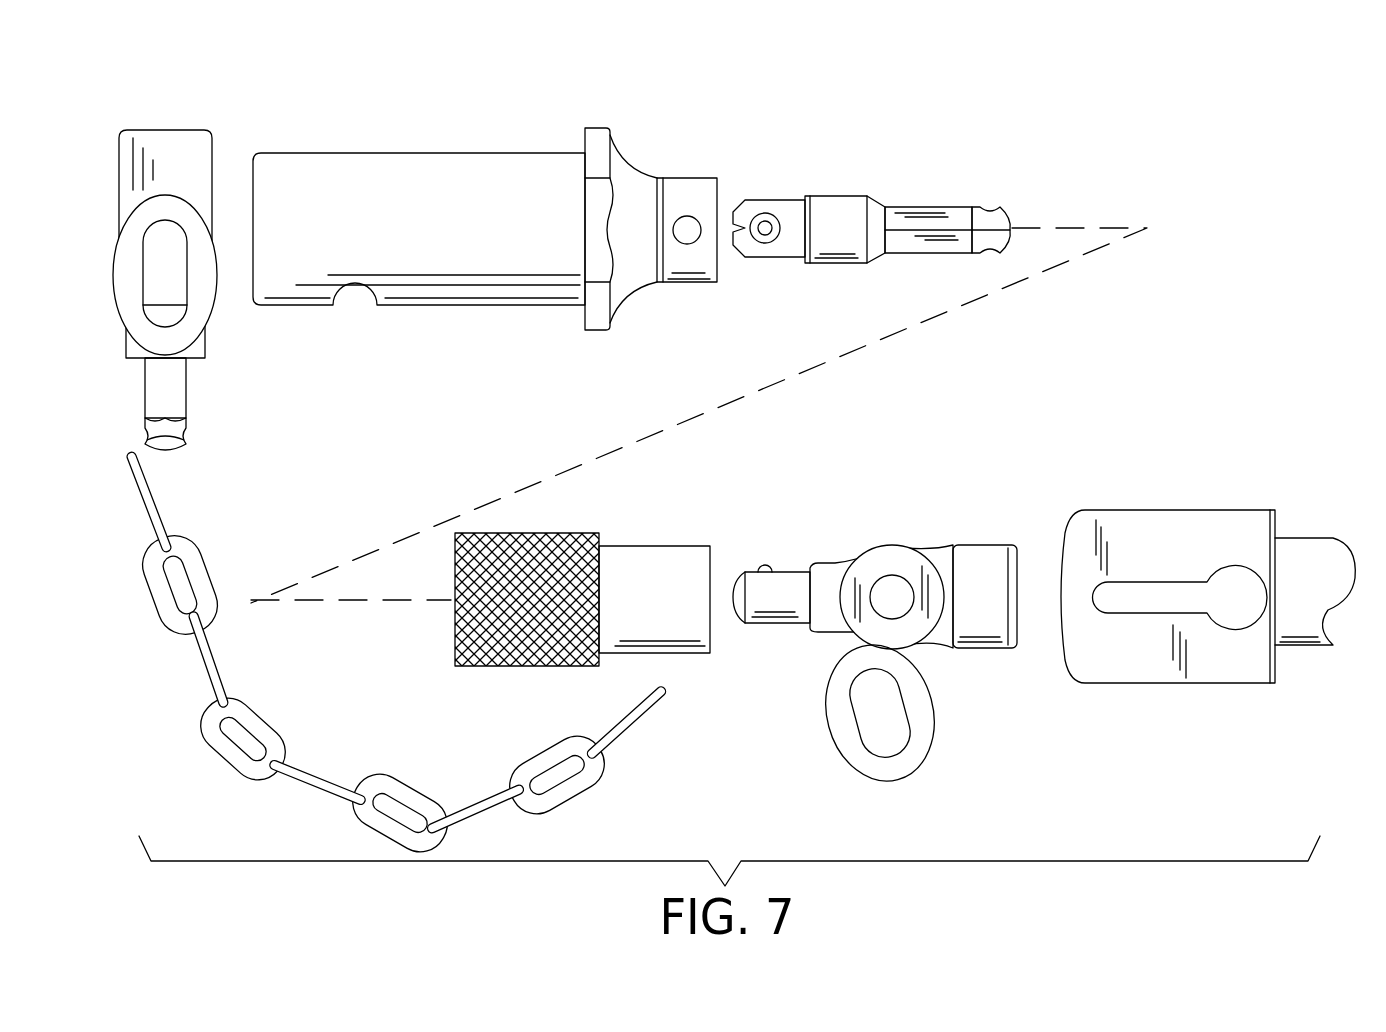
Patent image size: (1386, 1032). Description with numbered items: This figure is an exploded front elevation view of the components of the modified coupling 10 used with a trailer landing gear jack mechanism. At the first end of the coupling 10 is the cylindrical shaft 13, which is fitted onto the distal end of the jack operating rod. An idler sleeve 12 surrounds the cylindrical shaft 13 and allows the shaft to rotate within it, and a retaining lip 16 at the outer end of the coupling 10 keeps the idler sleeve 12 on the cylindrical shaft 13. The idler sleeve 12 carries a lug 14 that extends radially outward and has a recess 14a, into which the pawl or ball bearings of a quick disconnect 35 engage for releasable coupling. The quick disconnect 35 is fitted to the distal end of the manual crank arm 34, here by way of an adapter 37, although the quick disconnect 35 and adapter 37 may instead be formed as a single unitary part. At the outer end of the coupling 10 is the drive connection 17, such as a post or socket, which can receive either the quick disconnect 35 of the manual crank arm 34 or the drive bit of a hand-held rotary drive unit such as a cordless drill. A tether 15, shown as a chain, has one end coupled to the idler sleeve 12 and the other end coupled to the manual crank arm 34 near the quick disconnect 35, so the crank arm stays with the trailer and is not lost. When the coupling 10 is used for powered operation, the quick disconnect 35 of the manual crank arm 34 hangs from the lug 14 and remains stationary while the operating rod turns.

The coupling 10 is at (515, 107).
The idler sleeve 12 is at (187, 158).
The cylindrical shaft 13 is at (412, 192).
The lug 14 is at (145, 393).
The recess 14a is at (193, 428).
The tether 15 is at (220, 743).
The retaining lip 16 is at (598, 308).
The drive connection 17 is at (847, 210).
The manual crank arm 34 is at (1310, 562).
The quick disconnect 35 is at (458, 664).
The adapter 37 is at (935, 548).